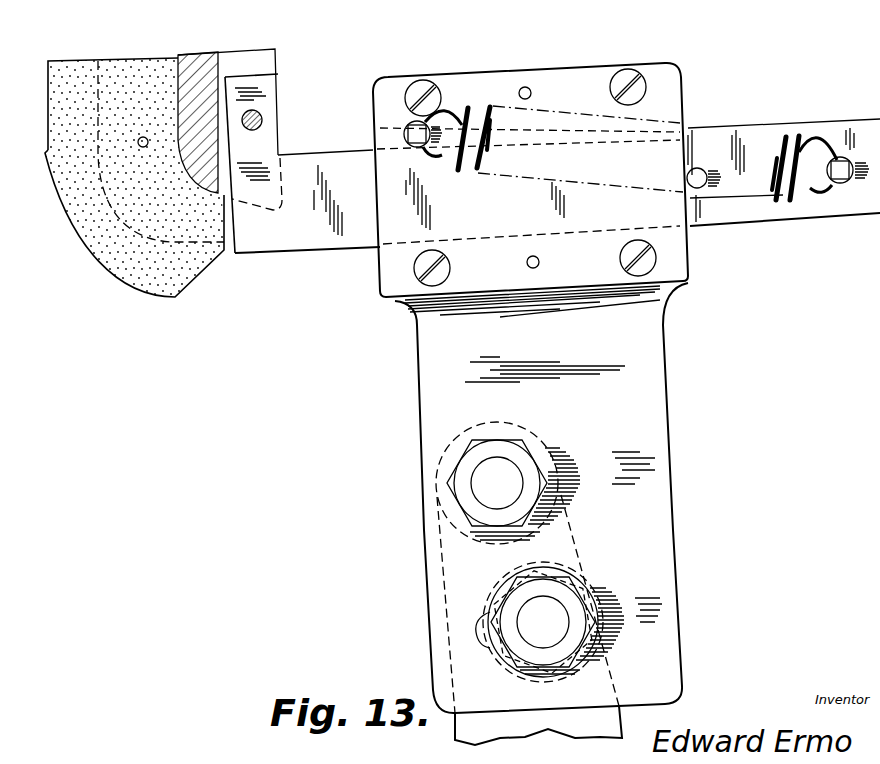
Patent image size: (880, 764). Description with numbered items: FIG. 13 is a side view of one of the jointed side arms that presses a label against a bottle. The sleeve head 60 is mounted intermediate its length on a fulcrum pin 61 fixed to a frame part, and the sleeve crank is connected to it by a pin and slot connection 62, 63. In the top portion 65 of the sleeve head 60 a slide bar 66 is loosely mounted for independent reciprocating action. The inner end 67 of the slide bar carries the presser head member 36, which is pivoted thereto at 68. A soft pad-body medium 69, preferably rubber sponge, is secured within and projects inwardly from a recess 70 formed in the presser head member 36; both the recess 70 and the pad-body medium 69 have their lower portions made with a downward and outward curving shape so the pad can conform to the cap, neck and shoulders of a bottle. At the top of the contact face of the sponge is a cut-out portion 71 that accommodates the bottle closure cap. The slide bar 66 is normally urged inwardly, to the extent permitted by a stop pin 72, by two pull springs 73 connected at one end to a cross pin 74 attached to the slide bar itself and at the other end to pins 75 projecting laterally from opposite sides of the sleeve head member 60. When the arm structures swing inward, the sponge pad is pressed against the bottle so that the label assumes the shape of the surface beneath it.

The presser head member 36 is at (214, 61).
The sleeve head 60 is at (648, 358).
The fulcrum pin 61 is at (488, 480).
The pin of pin and slot connection 62 is at (560, 622).
The slot of pin and slot connection 63 is at (477, 630).
The top portion of sleeve head member 65 is at (665, 80).
The slide bar 66 is at (300, 240).
The inner end of slide bar 67 is at (267, 87).
The pivot of presser head member 68 is at (261, 121).
The pad-body medium 69 is at (135, 73).
The recess 70 is at (172, 62).
The cut-out portion 71 is at (47, 63).
The stop pin 72 is at (698, 177).
The pull spring 73 is at (487, 104).
The cross pin 74 is at (840, 184).
The pin projecting from sleeve head member 75 is at (405, 135).